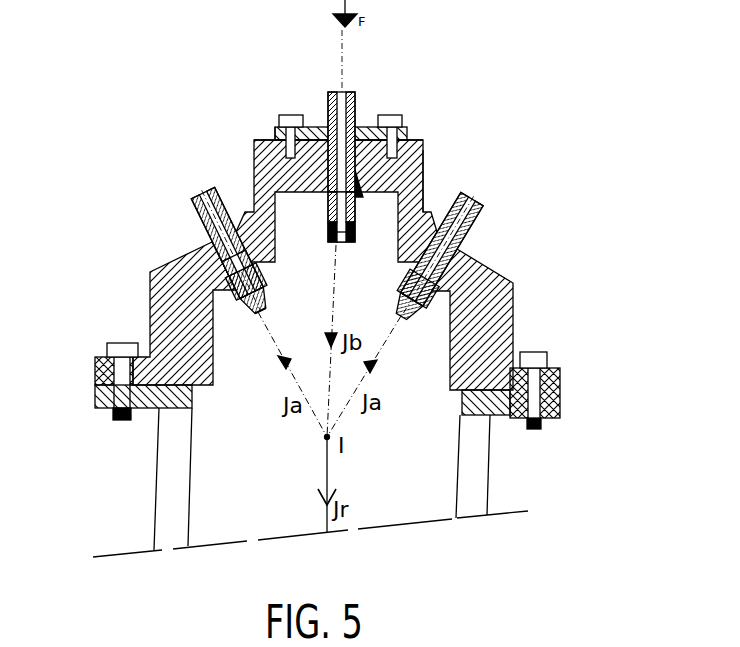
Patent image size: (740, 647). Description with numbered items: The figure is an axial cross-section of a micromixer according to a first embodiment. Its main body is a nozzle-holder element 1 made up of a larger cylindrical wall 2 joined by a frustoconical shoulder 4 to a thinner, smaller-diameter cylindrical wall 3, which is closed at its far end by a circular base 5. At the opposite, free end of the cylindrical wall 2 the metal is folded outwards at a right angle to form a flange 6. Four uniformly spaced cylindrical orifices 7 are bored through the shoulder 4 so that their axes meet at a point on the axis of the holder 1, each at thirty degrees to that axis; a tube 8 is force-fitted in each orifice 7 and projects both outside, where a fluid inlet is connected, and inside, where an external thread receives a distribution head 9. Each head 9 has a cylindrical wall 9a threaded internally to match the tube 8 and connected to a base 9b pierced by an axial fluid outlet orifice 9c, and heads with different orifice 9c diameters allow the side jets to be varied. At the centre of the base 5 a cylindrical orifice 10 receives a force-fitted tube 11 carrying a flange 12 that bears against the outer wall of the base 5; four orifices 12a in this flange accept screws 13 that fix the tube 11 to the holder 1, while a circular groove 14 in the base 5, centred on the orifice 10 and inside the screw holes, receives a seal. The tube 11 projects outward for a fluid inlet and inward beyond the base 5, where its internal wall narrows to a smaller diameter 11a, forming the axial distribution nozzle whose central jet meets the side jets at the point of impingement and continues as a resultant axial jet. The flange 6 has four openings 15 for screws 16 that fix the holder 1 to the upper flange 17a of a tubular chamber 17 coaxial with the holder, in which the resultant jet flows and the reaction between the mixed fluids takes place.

The nozzle-holder element 1 is at (508, 266).
The cylindrical wall 2 is at (486, 318).
The cylindrical wall 3 is at (428, 190).
The frustoconical shoulder 4 is at (477, 252).
The circular base 5 is at (428, 142).
The flange 6 is at (93, 364).
The cylindrical orifices 7 is at (195, 252).
The tube 8 is at (208, 188).
The distribution head 9 is at (238, 327).
The cylindrical wall 9a is at (270, 290).
The base 9b is at (275, 314).
The axial fluid outlet orifice 9c is at (262, 332).
The cylindrical orifice 10 is at (362, 200).
The tube 11 is at (357, 92).
The smaller diameter 11a is at (341, 245).
The flange 12 is at (380, 127).
The orifices 12a is at (277, 128).
The screws 13 is at (288, 117).
The circular groove 14 is at (310, 127).
The openings 15 is at (510, 418).
The screws 16 is at (543, 348).
The chamber 17 is at (475, 483).
The upper flange 17a is at (556, 408).